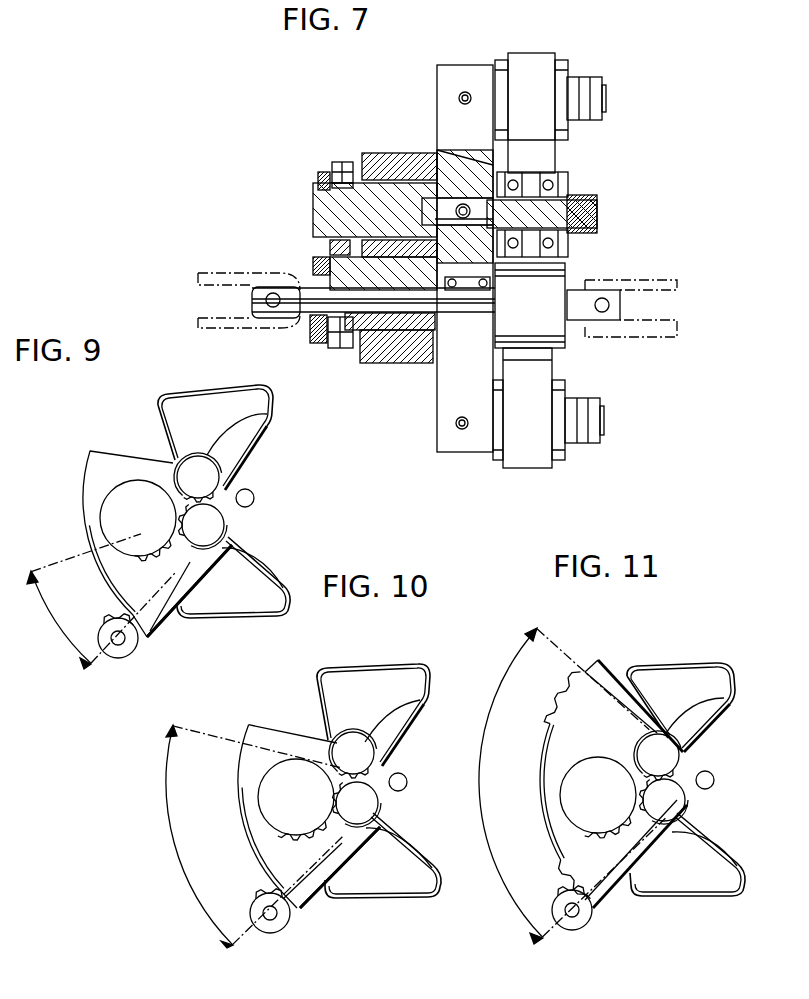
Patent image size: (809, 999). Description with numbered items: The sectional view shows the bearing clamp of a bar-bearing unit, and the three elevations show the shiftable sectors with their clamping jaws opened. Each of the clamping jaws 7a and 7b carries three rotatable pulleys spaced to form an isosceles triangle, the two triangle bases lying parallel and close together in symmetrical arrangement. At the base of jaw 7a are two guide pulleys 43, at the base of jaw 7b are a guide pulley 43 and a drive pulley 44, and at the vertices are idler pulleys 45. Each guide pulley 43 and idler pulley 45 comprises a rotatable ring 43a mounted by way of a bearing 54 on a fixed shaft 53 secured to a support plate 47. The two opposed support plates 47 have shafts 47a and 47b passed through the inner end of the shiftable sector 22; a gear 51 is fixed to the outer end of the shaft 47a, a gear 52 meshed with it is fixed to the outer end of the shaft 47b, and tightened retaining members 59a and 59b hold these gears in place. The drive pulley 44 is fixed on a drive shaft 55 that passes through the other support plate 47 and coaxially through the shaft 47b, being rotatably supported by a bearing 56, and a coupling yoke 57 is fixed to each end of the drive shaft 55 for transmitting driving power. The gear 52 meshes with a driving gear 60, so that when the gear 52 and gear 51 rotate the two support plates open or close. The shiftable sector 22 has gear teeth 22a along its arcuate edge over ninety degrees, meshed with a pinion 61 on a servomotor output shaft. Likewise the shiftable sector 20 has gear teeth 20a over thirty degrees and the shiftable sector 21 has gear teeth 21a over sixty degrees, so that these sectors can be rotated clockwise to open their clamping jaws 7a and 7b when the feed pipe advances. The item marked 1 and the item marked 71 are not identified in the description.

In FIG. 9, the shaft 1 is at (254, 496).
In FIG. 10, the shaft 1 is at (407, 780).
In FIG. 11, the shaft 1 is at (714, 780).
In FIG. 9, the clamping jaw 7a is at (183, 405).
In FIG. 10, the clamping jaw 7a is at (377, 685).
In FIG. 11, the clamping jaw 7a is at (675, 668).
In FIG. 9, the clamping jaw 7b is at (233, 600).
In FIG. 11, the clamping jaw 7b is at (690, 880).
In FIG. 9, the shiftable sector 20 is at (108, 455).
In FIG. 9, the gear teeth 20a is at (168, 612).
In FIG. 10, the shiftable sector 21 is at (270, 735).
In FIG. 10, the gear teeth 21a is at (312, 903).
In FIG. 7, the shiftable sector 22 is at (392, 362).
In FIG. 11, the shiftable sector 22 is at (603, 667).
In FIG. 11, the gear teeth 22a is at (537, 788).
In FIG. 7, the guide pulley 43 is at (572, 187).
In FIG. 7, the rotatable ring 43a is at (530, 170).
In FIG. 7, the drive pulley 44 is at (565, 335).
In FIG. 7, the idler pulley 45 is at (558, 60).
In FIG. 7, the support plate 47 is at (438, 120).
In FIG. 7, the shaft 47a is at (313, 214).
In FIG. 7, the shaft 47b is at (375, 362).
In FIG. 7, the gear 51 is at (343, 162).
In FIG. 9, the gear 51 is at (183, 470).
In FIG. 10, the gear 51 is at (363, 753).
In FIG. 11, the gear 51 is at (645, 750).
In FIG. 7, the gear 52 is at (335, 343).
In FIG. 9, the gear 52 is at (214, 522).
In FIG. 10, the gear 52 is at (367, 803).
In FIG. 11, the gear 52 is at (660, 803).
In FIG. 7, the fixed shaft 53 is at (597, 215).
In FIG. 7, the bearing 54 is at (556, 178).
In FIG. 7, the drive shaft 55 is at (595, 295).
In FIG. 7, the bearing 56 is at (490, 300).
In FIG. 7, the coupling yoke 57 is at (227, 328).
In FIG. 7, the retaining member 59a is at (318, 178).
In FIG. 7, the retaining member 59b is at (310, 330).
In FIG. 9, the driving gear 60 is at (108, 504).
In FIG. 10, the driving gear 60 is at (258, 793).
In FIG. 11, the driving gear 60 is at (587, 768).
In FIG. 9, the pinion 61 is at (117, 660).
In FIG. 11, the pinion 61 is at (572, 932).
In FIG. 10, the lower belt 71 is at (372, 885).